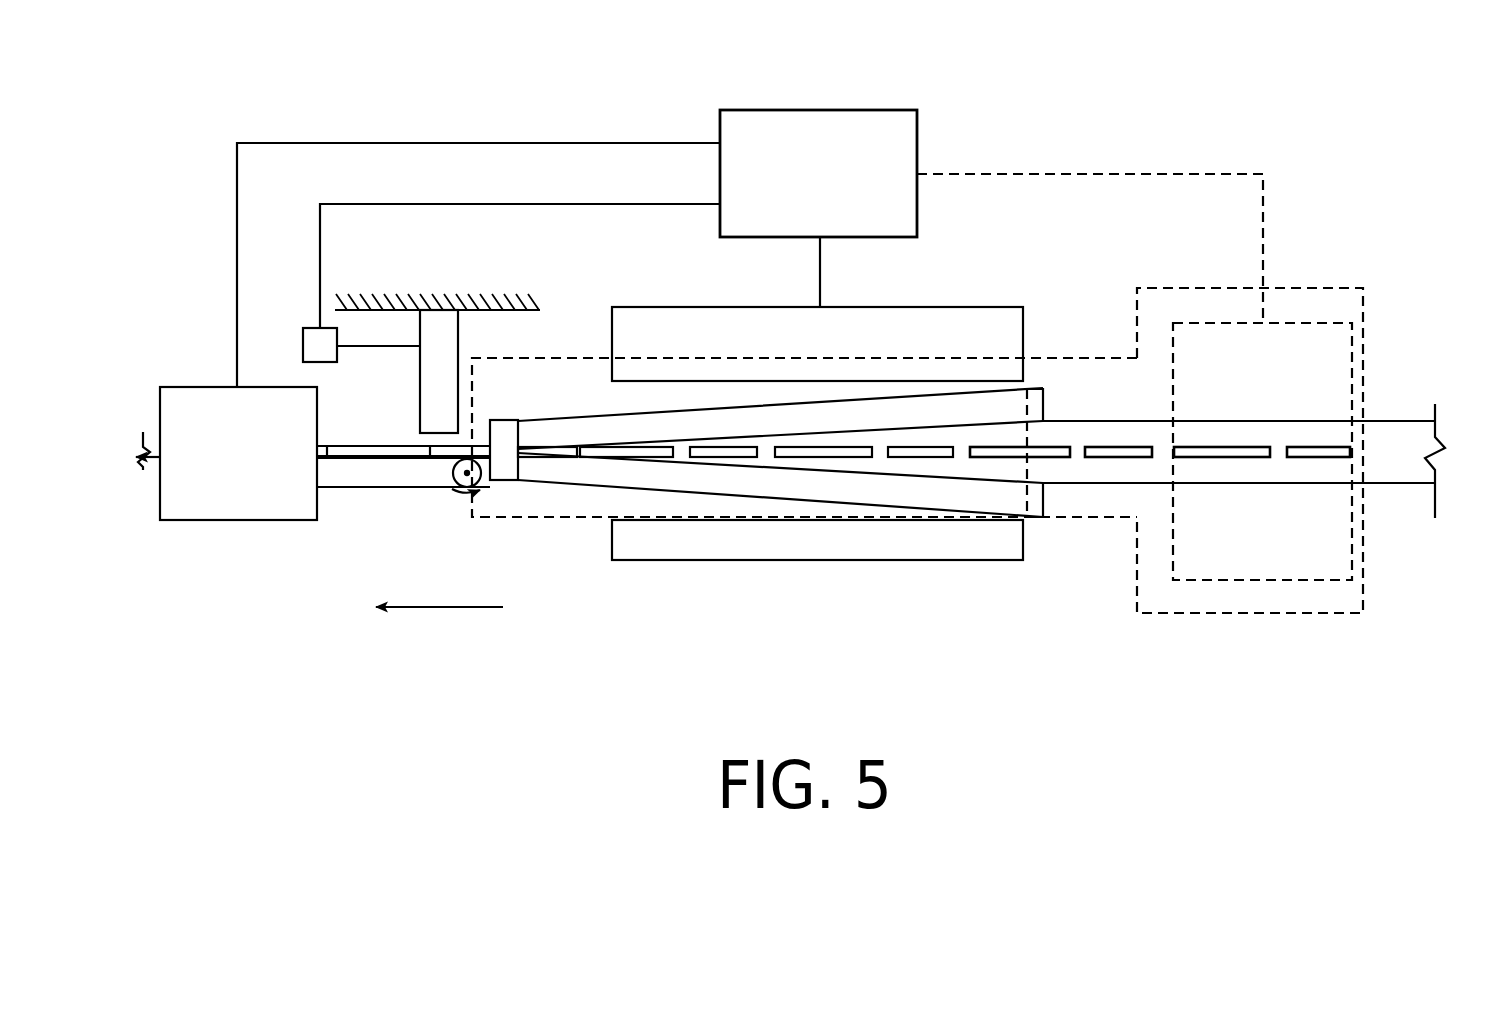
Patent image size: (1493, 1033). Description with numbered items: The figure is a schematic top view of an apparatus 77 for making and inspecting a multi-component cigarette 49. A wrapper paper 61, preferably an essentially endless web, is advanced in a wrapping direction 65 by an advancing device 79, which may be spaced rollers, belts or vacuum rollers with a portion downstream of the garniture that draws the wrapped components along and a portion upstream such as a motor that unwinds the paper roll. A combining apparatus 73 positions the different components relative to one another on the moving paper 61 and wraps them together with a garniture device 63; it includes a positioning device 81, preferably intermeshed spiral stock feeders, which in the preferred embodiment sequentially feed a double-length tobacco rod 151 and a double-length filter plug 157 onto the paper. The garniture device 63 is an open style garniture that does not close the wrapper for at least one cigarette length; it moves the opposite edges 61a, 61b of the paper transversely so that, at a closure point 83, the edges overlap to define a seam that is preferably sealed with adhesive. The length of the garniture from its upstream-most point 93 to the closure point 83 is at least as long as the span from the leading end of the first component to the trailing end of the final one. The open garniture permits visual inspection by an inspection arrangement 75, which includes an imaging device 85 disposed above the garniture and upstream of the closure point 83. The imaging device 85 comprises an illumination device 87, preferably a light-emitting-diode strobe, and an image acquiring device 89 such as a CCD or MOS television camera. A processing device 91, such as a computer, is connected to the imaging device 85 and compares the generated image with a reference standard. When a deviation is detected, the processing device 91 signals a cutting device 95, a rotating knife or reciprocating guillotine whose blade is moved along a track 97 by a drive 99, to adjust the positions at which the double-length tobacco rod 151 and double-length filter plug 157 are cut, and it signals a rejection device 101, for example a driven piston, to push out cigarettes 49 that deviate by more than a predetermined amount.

The cigarette 49 is at (352, 459).
The paper 61 is at (1440, 440).
The opposite edge of the paper 61a is at (1395, 420).
The opposite edge of the paper 61b is at (1395, 485).
The garniture device 63 is at (1048, 384).
The wrapping direction 65 is at (439, 625).
The combining apparatus 73 is at (1177, 617).
The inspection arrangement 75 is at (924, 229).
The apparatus for making and inspecting multi-component cigarettes 77 is at (718, 604).
The advancing device 79 is at (430, 489).
The positioning device 81 is at (1327, 322).
The closure point 83 is at (542, 456).
The imaging device 85 is at (905, 566).
The illumination device 87 is at (986, 563).
The image acquiring device 89 is at (1026, 308).
The processing device 91 is at (918, 160).
The upstream-most point 93 is at (1048, 403).
The cutting device 95 is at (474, 382).
The track 97 is at (514, 312).
The drive 99 is at (304, 329).
The rejection device 101 is at (240, 522).
The double-length tobacco rod 151 is at (980, 446).
The double-length filter plug 157 is at (1103, 446).